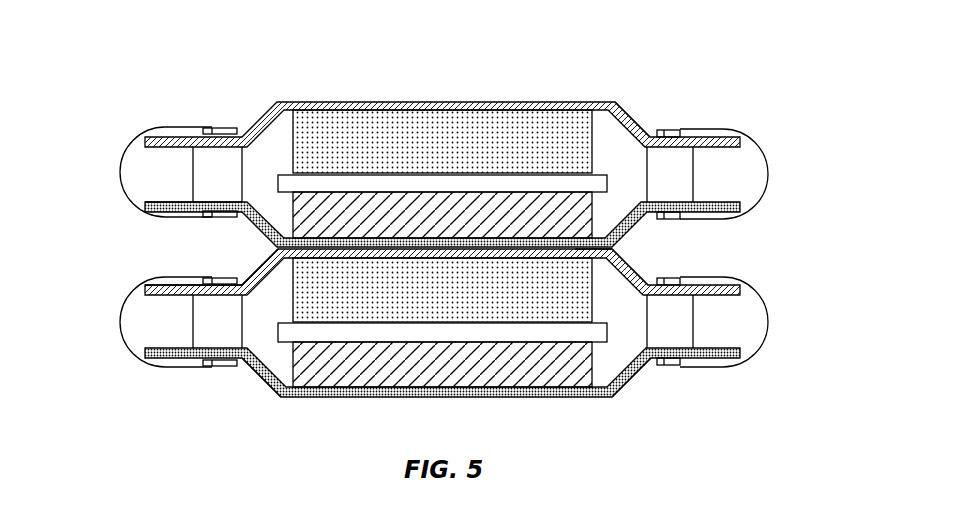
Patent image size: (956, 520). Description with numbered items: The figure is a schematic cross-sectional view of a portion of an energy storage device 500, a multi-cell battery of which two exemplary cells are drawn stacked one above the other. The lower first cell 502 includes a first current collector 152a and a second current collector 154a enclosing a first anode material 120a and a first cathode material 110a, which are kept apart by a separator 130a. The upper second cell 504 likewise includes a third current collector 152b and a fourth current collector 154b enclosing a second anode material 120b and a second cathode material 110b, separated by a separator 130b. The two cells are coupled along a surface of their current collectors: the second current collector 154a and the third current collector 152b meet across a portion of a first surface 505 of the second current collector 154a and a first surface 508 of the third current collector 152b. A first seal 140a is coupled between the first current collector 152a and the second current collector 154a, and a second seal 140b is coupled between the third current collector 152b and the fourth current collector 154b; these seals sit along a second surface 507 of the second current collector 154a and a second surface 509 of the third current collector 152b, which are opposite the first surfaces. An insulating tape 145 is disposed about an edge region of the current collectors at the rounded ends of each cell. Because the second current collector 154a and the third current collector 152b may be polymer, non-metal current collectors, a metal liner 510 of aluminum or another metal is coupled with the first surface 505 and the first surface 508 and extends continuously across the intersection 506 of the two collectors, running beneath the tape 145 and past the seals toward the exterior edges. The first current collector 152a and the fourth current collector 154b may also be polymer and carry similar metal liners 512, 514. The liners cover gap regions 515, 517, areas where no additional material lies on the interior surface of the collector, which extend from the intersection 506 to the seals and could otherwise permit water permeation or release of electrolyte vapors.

The energy storage device 500 is at (88, 62).
The first cathode material 110a is at (332, 323).
The second cathode material 110b is at (470, 102).
The first anode material 120a is at (528, 397).
The second anode material 120b is at (312, 192).
The separator 130a is at (423, 343).
The separator 130b is at (387, 177).
The first seal 140a is at (695, 333).
The second seal 140b is at (700, 150).
The tape 145 is at (768, 165).
The first current collector 152a is at (738, 367).
The third current collector 152b is at (740, 218).
The second current collector 154a is at (765, 325).
The fourth current collector 154b is at (765, 177).
The first cell 502 is at (160, 358).
The second cell 504 is at (187, 130).
The first surface 505 is at (152, 285).
The intersection 506 is at (627, 250).
The second surface 507 is at (148, 297).
The first surface 508 is at (157, 217).
The second surface 509 is at (152, 201).
The metal liner 510 is at (655, 273).
The metal liner 512 is at (627, 395).
The metal liner 514 is at (636, 112).
The gap region 515 is at (247, 372).
The gap region 517 is at (243, 268).